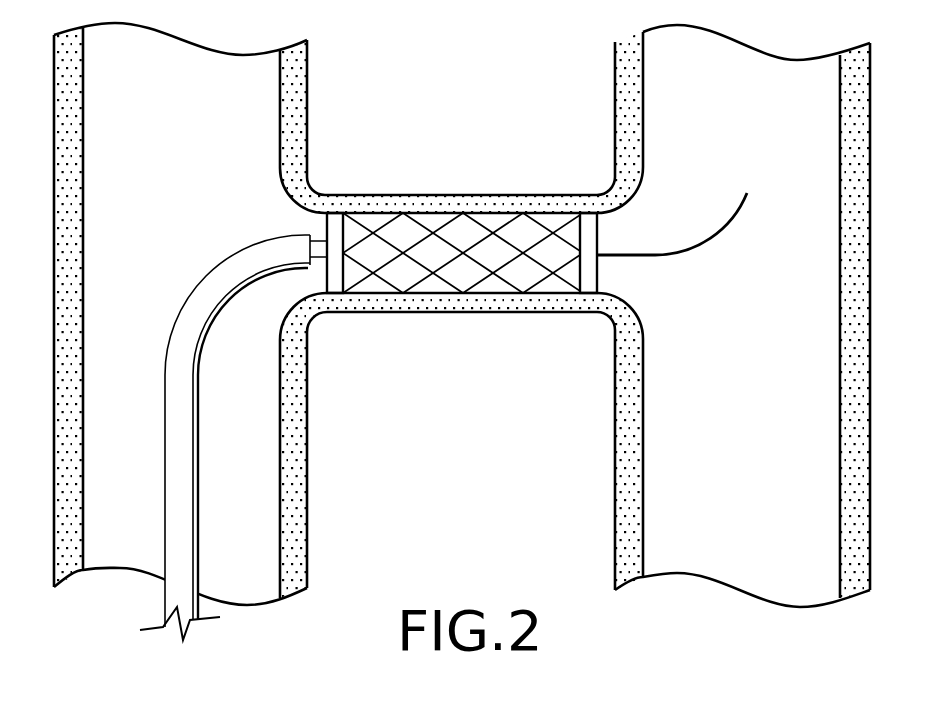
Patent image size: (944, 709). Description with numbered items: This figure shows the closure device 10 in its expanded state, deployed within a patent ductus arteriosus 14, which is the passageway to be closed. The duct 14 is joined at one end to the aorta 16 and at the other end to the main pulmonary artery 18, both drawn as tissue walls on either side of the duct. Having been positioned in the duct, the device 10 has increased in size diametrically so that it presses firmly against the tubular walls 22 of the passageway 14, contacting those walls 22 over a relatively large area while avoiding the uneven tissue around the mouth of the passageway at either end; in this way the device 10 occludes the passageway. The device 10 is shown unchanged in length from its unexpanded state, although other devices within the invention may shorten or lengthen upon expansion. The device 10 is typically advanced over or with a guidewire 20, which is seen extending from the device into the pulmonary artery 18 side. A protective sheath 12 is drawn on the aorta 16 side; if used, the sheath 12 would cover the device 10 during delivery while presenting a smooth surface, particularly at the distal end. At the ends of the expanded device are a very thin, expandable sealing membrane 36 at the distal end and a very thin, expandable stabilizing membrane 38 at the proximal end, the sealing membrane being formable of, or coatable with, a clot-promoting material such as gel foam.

The closure device 10 is at (463, 248).
The protective sheath 12 is at (192, 545).
The patent ductus arteriosus 14 is at (384, 236).
The aorta 16 is at (196, 127).
The main pulmonary artery 18 is at (769, 132).
The guidewire 20 is at (708, 237).
The tubular walls 22 is at (447, 300).
The sealing membrane 36 is at (588, 285).
The stabilizing membrane 38 is at (332, 280).